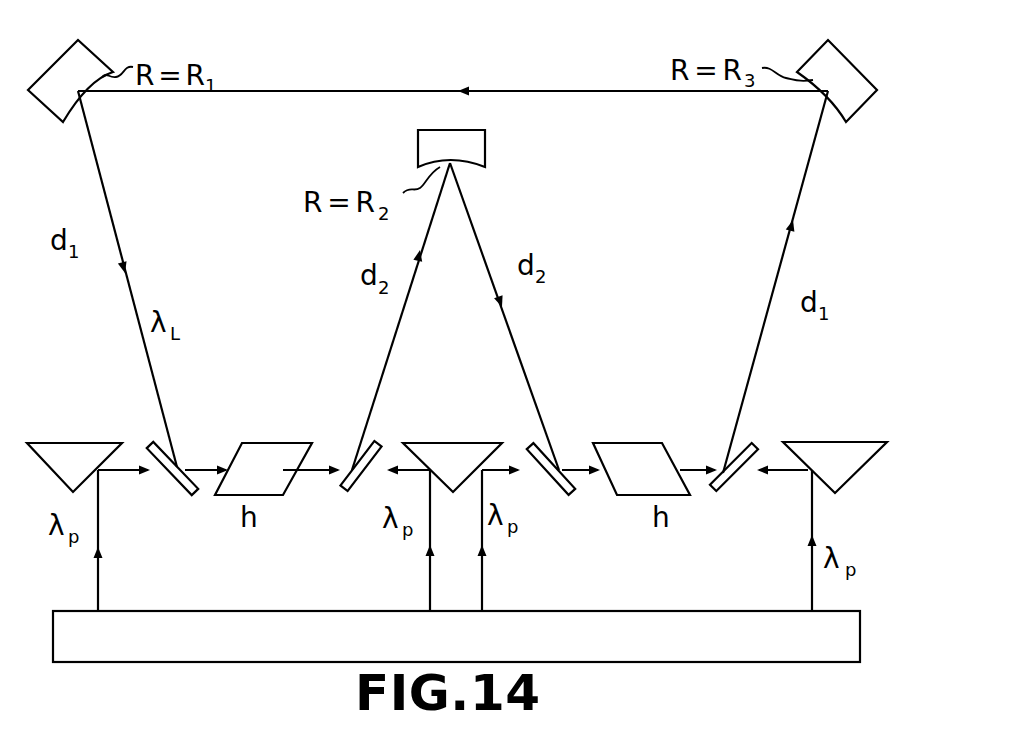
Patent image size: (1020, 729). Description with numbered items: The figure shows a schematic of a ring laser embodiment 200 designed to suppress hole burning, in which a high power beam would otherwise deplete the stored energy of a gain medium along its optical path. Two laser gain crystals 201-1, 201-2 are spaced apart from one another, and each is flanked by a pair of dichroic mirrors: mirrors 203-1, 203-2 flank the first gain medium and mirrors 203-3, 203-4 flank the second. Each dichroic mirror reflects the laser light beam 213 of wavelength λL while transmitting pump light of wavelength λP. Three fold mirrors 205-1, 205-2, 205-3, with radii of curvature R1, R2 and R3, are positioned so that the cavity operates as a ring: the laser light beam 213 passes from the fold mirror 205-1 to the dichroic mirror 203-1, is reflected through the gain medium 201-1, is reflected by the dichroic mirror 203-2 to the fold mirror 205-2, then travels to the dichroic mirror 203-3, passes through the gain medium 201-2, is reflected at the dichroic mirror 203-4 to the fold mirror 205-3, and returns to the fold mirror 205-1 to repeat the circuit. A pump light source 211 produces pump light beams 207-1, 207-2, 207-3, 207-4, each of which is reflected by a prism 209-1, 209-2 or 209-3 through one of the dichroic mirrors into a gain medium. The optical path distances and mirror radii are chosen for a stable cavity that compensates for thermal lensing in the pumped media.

The ring laser embodiment 200 is at (460, 61).
The laser gain crystal 201-1 is at (267, 440).
The laser gain crystal 201-2 is at (633, 440).
The dichroic mirror 203-1 is at (181, 492).
The dichroic mirror 203-2 is at (347, 489).
The dichroic mirror 203-3 is at (565, 491).
The dichroic mirror 203-4 is at (730, 481).
The fold mirror 205-1 is at (97, 53).
The fold mirror 205-2 is at (485, 145).
The fold mirror 205-3 is at (810, 58).
The pump light beam 207-1 is at (100, 587).
The pump light beam 207-2 is at (430, 584).
The pump light beam 207-3 is at (483, 575).
The pump light beam 207-4 is at (810, 577).
The prism 209-1 is at (78, 442).
The prism 209-2 is at (447, 442).
The prism 209-3 is at (837, 440).
The pump light source 211 is at (808, 664).
The laser light beam 213 is at (259, 92).